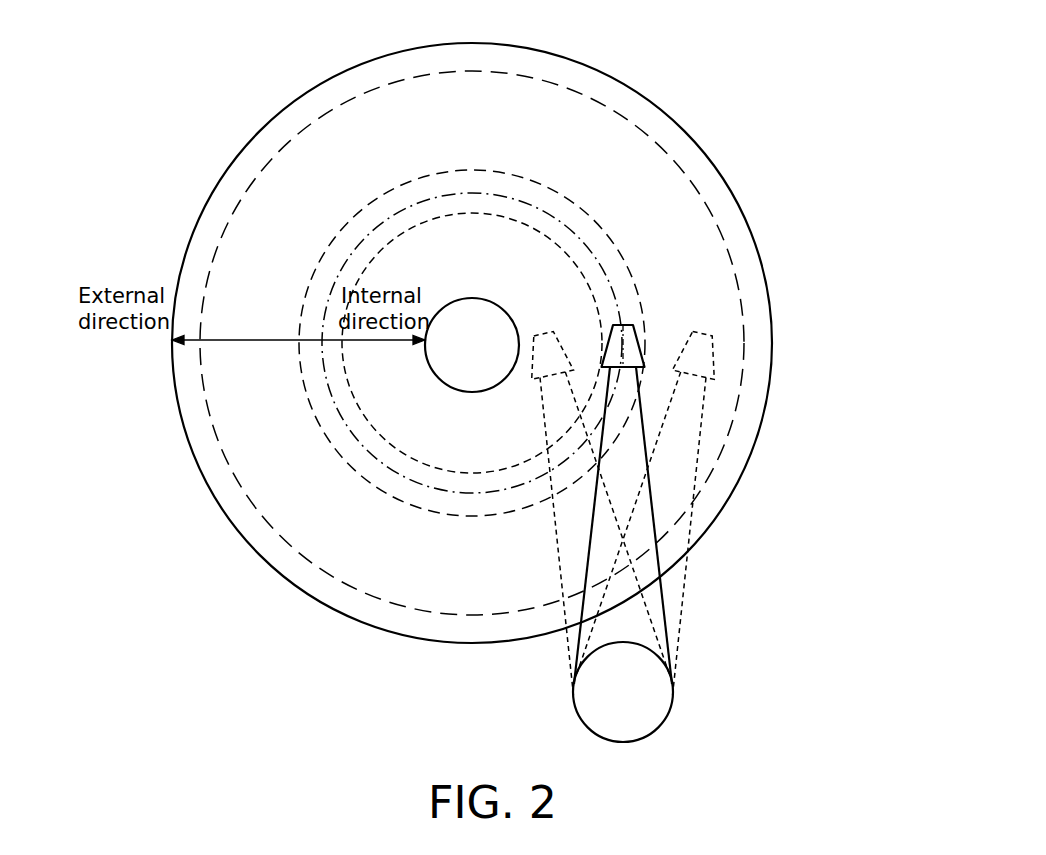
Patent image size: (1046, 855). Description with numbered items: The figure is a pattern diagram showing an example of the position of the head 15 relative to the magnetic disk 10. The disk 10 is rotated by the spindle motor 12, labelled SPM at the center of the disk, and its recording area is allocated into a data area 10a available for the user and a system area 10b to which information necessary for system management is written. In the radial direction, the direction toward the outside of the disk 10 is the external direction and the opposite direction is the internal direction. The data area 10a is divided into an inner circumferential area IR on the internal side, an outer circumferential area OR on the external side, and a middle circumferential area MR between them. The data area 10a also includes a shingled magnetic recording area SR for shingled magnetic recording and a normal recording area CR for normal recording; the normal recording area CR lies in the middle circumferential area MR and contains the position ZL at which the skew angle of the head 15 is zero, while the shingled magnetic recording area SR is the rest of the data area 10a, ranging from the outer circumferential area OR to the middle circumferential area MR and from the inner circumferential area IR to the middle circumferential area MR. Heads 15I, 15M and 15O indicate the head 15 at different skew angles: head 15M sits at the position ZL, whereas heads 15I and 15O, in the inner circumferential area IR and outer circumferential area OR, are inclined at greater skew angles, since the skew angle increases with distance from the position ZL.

The magnetic disk 10 is at (509, 343).
The data area 10a is at (293, 160).
The system area 10b is at (750, 427).
The spindle motor 12 is at (468, 393).
The spindle motor SPM is at (472, 344).
The head 15 is at (716, 482).
The head in inner circumferential area 15I is at (562, 342).
The head in middle circumferential area 15M is at (643, 333).
The head in outer circumferential area 15O is at (718, 360).
The shingled magnetic recording area SR is at (437, 245).
The outer circumferential area OR is at (638, 162).
The middle circumferential area MR is at (567, 217).
The inner circumferential area IR is at (510, 297).
The normal recording area CR is at (489, 170).
The zero skew angle position ZL is at (340, 268).